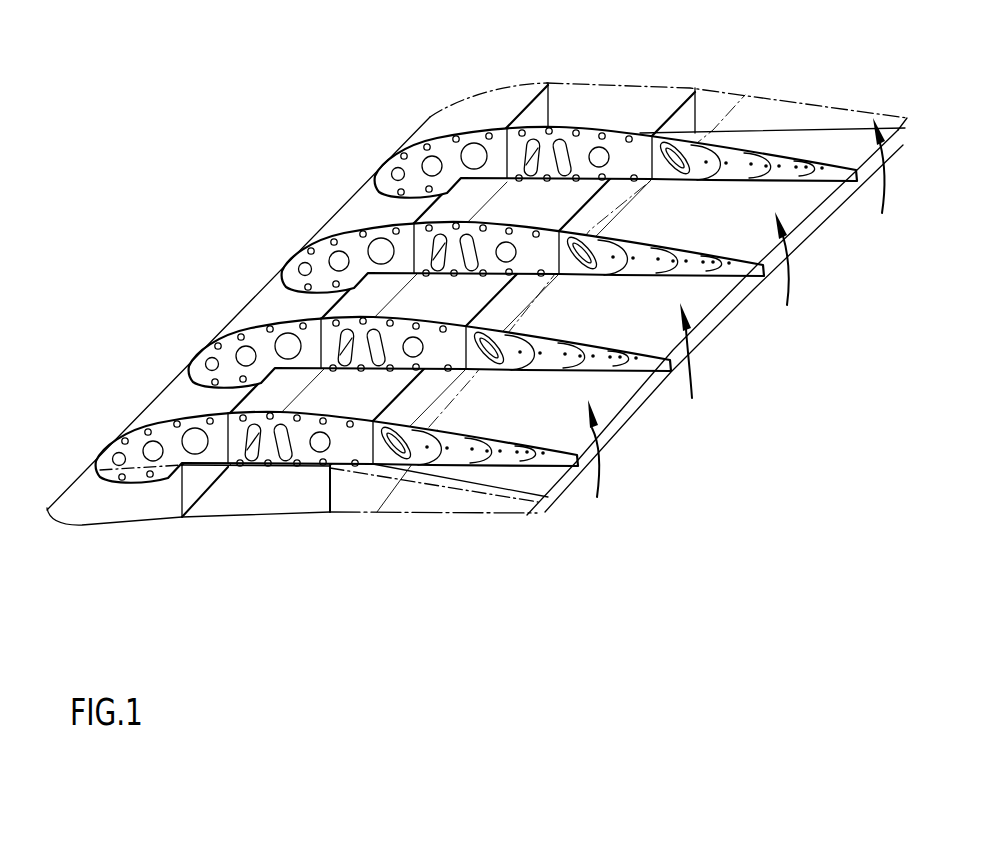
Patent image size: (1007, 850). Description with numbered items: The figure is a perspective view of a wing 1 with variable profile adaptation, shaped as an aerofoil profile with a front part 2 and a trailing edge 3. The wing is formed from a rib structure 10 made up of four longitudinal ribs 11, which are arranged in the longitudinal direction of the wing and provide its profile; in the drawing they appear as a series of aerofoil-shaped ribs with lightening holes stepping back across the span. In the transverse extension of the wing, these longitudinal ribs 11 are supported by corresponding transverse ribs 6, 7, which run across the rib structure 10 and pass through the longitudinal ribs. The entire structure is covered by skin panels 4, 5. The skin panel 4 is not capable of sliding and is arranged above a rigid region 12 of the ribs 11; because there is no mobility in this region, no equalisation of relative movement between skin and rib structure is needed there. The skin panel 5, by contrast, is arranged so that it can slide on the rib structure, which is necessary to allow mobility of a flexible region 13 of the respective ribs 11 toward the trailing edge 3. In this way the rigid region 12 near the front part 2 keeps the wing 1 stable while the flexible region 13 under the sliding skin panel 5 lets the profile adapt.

The wing 1 is at (113, 187).
The front part 2 is at (268, 296).
The trailing edge 3 is at (702, 308).
The skin panel 4 is at (590, 97).
The skin panel 5 is at (760, 115).
The transverse rib 6 is at (192, 492).
The transverse rib 7 is at (335, 490).
The rib structure 10 is at (357, 186).
The longitudinal rib 11 is at (441, 139).
The rigid region 12 is at (128, 440).
The flexible region 13 is at (459, 490).